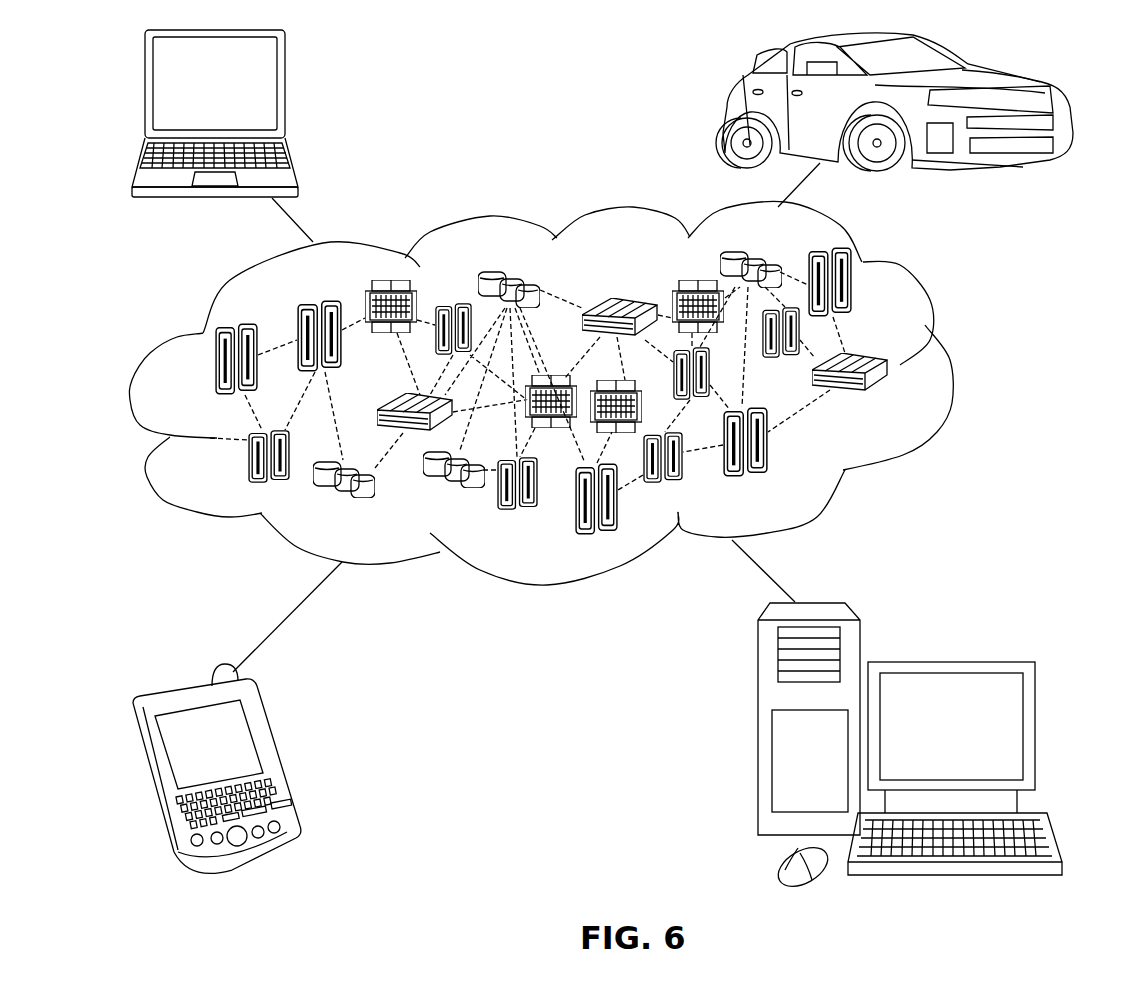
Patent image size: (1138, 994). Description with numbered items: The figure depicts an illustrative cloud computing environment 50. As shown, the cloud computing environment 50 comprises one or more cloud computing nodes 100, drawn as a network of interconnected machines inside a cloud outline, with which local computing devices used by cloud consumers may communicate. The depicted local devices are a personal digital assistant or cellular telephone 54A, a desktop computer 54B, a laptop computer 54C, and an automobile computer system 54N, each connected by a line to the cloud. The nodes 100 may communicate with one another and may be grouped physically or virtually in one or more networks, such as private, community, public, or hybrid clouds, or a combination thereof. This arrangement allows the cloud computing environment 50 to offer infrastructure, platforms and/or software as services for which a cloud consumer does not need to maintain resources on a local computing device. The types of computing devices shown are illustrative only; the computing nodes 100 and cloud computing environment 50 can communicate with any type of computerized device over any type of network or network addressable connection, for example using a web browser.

The cloud computing environment 50 is at (948, 372).
The cloud computing nodes 100 is at (890, 400).
The personal digital assistant (PDA) or cellular telephone 54A is at (273, 757).
The desktop computer 54B is at (948, 660).
The laptop computer 54C is at (287, 92).
The automobile computer system 54N is at (728, 110).